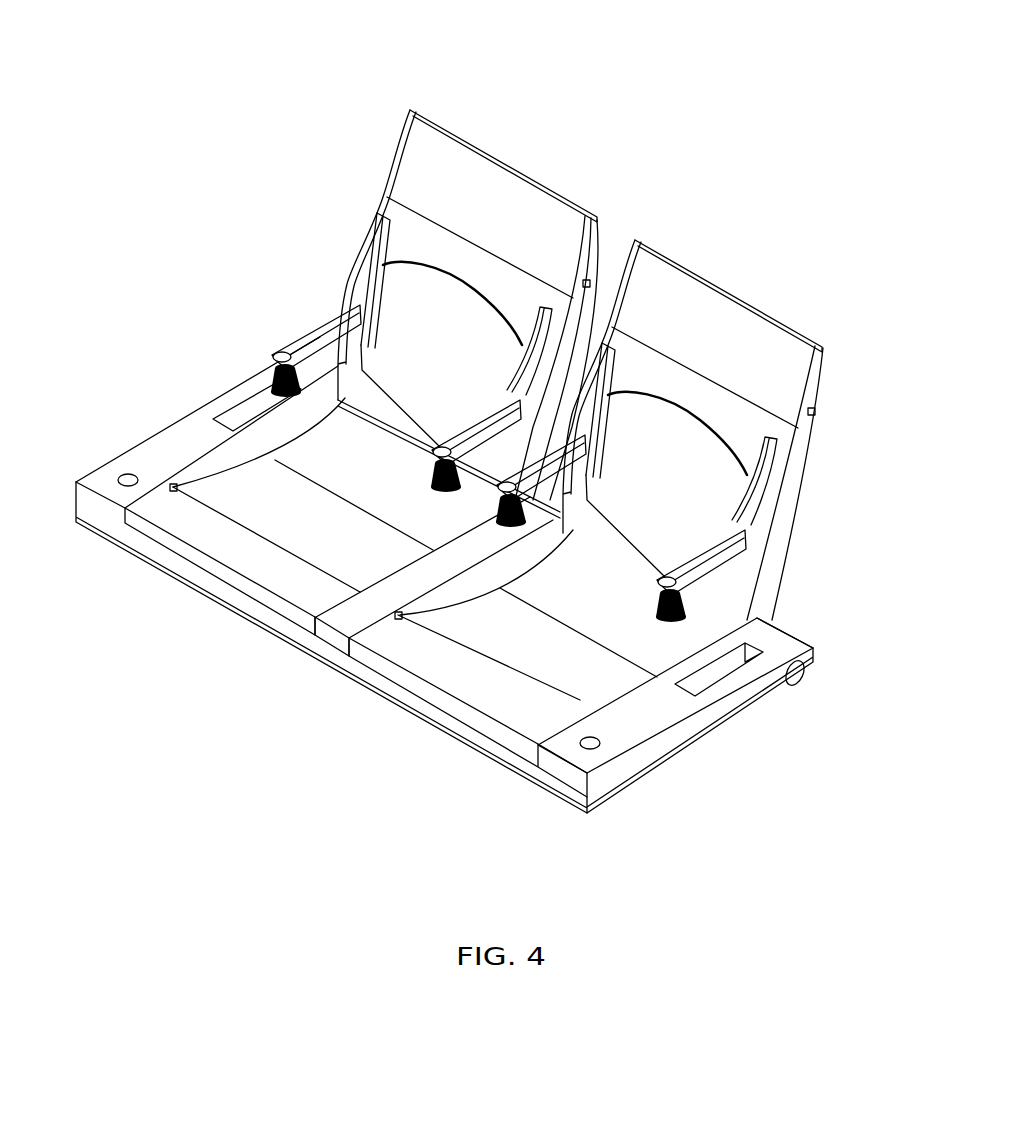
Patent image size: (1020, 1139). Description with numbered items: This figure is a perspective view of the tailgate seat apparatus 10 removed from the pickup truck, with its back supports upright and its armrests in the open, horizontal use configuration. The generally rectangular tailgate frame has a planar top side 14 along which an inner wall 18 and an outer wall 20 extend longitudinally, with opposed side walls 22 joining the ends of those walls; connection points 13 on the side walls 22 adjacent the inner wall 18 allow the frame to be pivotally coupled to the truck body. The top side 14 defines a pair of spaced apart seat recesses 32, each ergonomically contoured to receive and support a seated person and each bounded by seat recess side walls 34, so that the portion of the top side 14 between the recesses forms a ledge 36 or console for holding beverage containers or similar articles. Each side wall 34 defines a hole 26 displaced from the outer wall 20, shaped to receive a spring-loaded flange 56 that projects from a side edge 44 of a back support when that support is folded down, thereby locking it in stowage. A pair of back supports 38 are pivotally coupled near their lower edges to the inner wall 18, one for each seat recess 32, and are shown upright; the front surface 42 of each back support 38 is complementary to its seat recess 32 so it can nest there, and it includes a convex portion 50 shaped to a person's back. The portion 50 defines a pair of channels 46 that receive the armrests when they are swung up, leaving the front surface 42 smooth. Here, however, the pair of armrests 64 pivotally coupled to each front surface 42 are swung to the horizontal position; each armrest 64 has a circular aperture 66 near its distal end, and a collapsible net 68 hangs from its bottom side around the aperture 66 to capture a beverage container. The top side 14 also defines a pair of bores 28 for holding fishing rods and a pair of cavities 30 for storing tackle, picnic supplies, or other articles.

The tailgate seat apparatus 10 is at (683, 68).
The connection points 13 is at (808, 670).
The top side 14 is at (180, 471).
The inner wall 18 is at (789, 629).
The outer wall 20 is at (207, 580).
The side walls 22 is at (636, 768).
The hole 26 is at (182, 491).
The bores 28 is at (124, 474).
The cavities 30 is at (232, 407).
The seat recesses 32 is at (200, 546).
The seat recess side walls 34 is at (277, 460).
The ledge 36 is at (332, 640).
The back supports 38 is at (381, 85).
The front surface 42 is at (445, 173).
The side edges 44 is at (568, 350).
The channels 46 is at (378, 225).
The convex portion 50 is at (445, 323).
The spring-loaded flange 56 is at (590, 278).
The armrests 64 is at (335, 335).
The circular aperture 66 is at (280, 350).
The net 68 is at (272, 365).